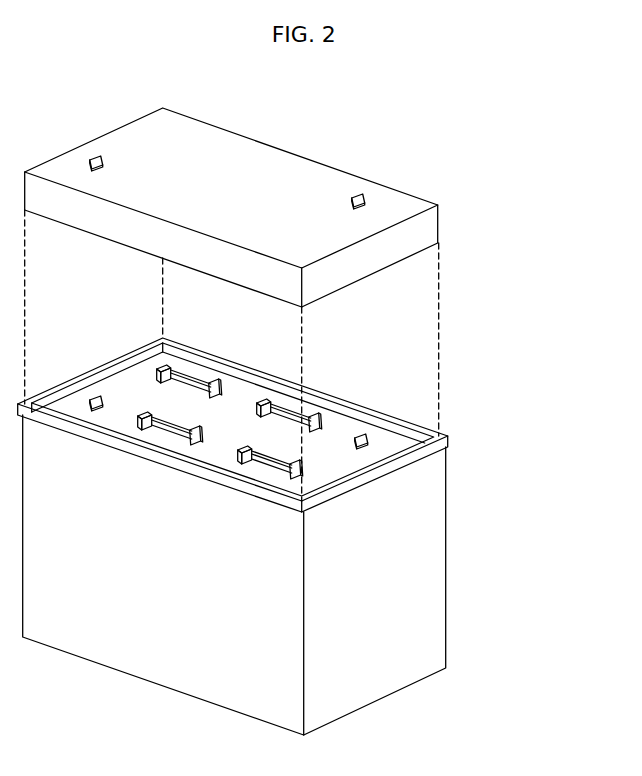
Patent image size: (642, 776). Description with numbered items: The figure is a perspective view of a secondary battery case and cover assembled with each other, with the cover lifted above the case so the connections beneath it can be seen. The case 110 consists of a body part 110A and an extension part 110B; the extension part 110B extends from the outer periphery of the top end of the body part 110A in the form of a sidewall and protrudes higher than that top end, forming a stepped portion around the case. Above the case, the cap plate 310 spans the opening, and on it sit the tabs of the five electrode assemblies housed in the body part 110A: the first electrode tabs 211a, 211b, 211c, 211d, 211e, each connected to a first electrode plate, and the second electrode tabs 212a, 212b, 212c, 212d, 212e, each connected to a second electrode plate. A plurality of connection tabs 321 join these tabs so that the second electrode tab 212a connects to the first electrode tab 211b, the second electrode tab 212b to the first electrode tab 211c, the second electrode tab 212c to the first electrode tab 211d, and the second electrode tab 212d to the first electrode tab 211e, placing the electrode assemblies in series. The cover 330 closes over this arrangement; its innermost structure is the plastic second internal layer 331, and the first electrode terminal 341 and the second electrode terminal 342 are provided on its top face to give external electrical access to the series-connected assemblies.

The case 110 is at (313, 536).
The body part 110A is at (432, 485).
The extension part 110B is at (283, 425).
The cap plate 310 is at (395, 437).
The connection tabs 321 is at (161, 407).
The cover 330 is at (242, 145).
The second internal layer 331 is at (370, 419).
The first electrode terminal 341 is at (85, 149).
The second electrode terminal 342 is at (354, 185).
The first electrode tab 211a is at (80, 402).
The first electrode tab 211b is at (207, 374).
The first electrode tab 211c is at (192, 439).
The first electrode tab 211d is at (304, 407).
The first electrode tab 211e is at (287, 470).
The second electrode tab 212a is at (159, 357).
The second electrode tab 212b is at (132, 414).
The second electrode tab 212c is at (255, 390).
The second electrode tab 212d is at (232, 450).
The second electrode tab 212e is at (350, 427).